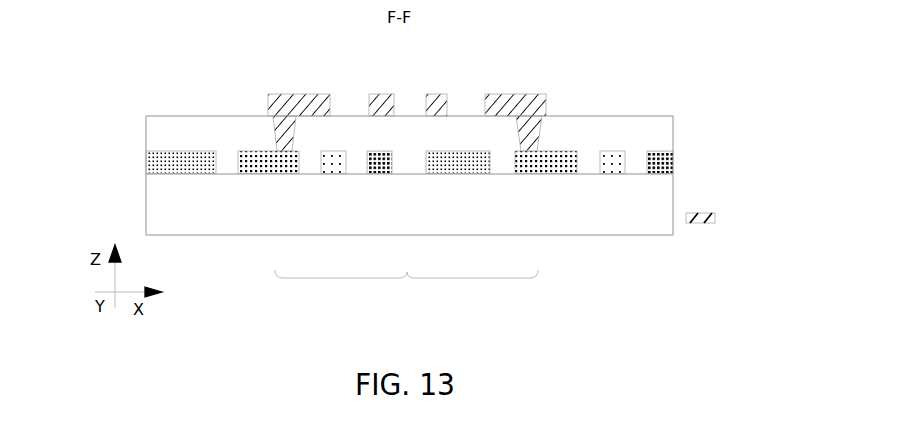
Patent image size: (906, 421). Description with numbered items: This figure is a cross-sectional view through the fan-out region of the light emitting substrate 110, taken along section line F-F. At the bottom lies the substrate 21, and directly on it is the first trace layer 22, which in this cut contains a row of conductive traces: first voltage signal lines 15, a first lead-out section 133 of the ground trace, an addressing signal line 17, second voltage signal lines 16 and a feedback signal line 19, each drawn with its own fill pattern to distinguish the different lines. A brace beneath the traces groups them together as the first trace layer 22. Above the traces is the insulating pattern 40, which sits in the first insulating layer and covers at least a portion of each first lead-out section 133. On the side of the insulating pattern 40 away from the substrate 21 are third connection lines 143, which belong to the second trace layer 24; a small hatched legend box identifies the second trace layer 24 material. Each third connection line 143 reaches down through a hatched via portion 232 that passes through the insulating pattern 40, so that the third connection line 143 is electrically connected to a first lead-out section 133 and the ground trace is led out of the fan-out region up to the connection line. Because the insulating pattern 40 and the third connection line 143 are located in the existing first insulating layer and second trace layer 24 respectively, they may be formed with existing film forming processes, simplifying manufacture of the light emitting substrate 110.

The light emitting substrate 110 is at (77, 62).
The insulating pattern 40 is at (190, 130).
The substrate 21 is at (155, 212).
The third connection line 143 is at (513, 107).
The via connecting portion 232 is at (277, 134).
The first voltage signal line 15 is at (198, 174).
The first lead-out section 133 is at (258, 174).
The addressing signal line 17 is at (331, 164).
The second voltage signal line 16 is at (377, 164).
The feedback signal line 19 is at (607, 165).
The first trace layer 22 is at (406, 289).
The second trace layer 24 is at (715, 218).